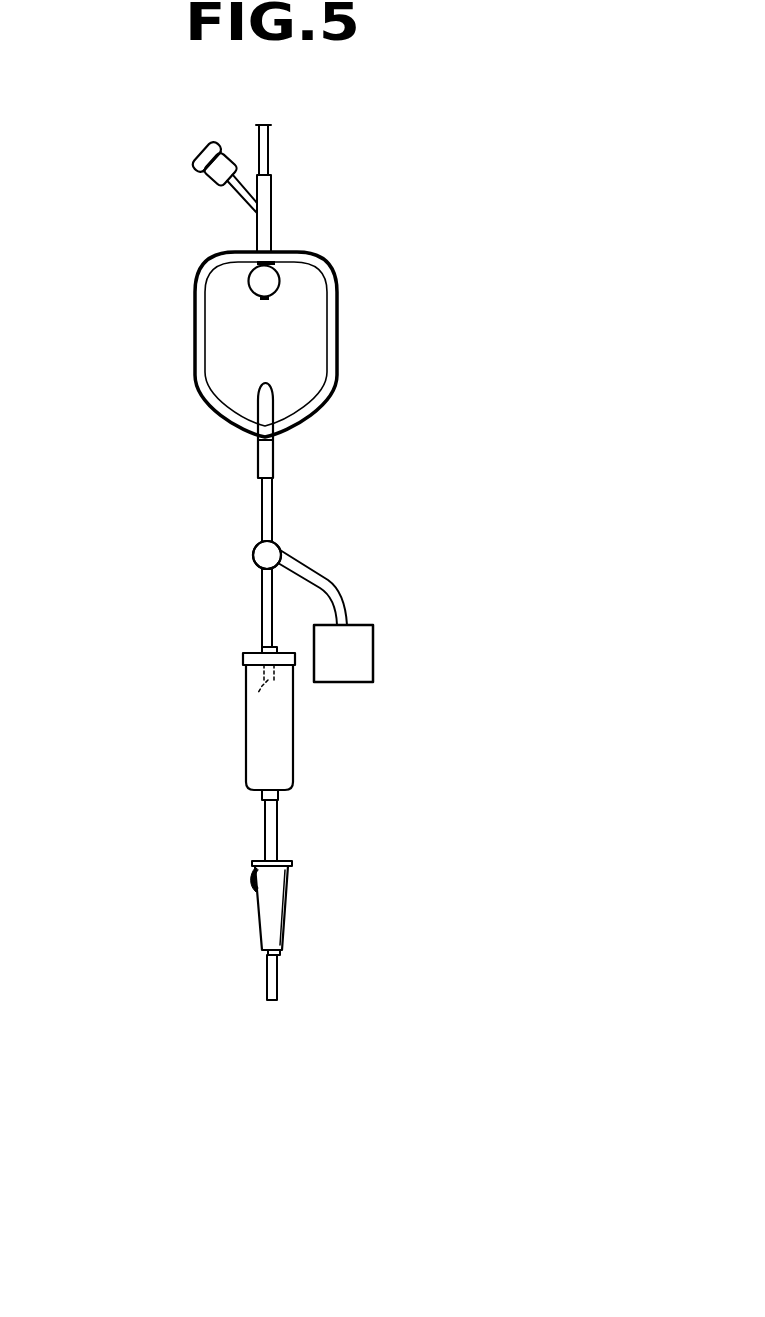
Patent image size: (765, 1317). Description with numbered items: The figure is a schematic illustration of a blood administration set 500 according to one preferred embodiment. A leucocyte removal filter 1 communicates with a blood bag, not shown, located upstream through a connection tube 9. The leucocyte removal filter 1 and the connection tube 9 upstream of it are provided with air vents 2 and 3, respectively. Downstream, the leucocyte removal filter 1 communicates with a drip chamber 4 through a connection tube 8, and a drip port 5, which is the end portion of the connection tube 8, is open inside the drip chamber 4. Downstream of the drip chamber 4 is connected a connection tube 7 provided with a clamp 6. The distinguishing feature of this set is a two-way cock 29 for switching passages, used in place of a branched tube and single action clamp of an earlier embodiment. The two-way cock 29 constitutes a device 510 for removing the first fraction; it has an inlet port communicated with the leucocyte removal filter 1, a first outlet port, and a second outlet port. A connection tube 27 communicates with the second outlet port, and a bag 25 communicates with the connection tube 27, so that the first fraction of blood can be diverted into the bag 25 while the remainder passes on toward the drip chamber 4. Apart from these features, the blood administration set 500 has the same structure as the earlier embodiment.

The leucocyte removal filter 1 is at (333, 350).
The air vent 2 is at (250, 274).
The air vent 3 is at (206, 152).
The drip chamber 4 is at (287, 753).
The drip port 5 is at (258, 693).
The clamp 6 is at (280, 927).
The connection tube 7 is at (277, 842).
The connection tube 8 is at (273, 498).
The connection tube 9 is at (270, 155).
The bag 25 is at (367, 658).
The connection tube 27 is at (332, 590).
The two-way cock 29 is at (255, 548).
The device for removing the first fraction 510 is at (201, 563).
The blood administration set 500 is at (279, 1048).